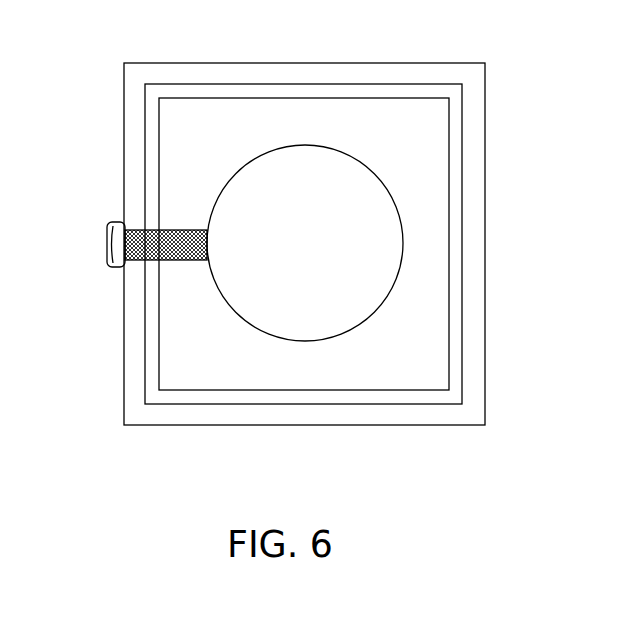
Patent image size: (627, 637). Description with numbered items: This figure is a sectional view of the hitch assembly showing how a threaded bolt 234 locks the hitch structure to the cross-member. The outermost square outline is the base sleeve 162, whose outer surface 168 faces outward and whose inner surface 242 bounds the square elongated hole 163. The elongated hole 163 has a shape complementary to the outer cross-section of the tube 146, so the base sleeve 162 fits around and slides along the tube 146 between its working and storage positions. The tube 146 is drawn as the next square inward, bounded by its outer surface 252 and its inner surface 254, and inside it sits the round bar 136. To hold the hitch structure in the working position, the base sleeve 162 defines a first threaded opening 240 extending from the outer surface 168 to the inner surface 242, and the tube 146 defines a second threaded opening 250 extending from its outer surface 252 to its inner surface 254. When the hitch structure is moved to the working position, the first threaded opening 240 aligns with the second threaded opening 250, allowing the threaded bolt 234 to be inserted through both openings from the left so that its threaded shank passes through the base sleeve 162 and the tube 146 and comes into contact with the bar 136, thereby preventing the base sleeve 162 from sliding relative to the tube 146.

The elongated hole 163 is at (313, 255).
The tube 146 is at (298, 118).
The inner surface of the base sleeve 242 is at (460, 167).
The base sleeve 162 is at (473, 79).
The outer surface of the base sleeve 168 is at (486, 148).
The bar 136 is at (368, 215).
The second threaded opening 250 is at (147, 228).
The threaded bolt 234 is at (112, 252).
The first threaded opening 240 is at (128, 266).
The inner surface of the tube 254 is at (240, 313).
The outer surface of the tube 252 is at (318, 390).